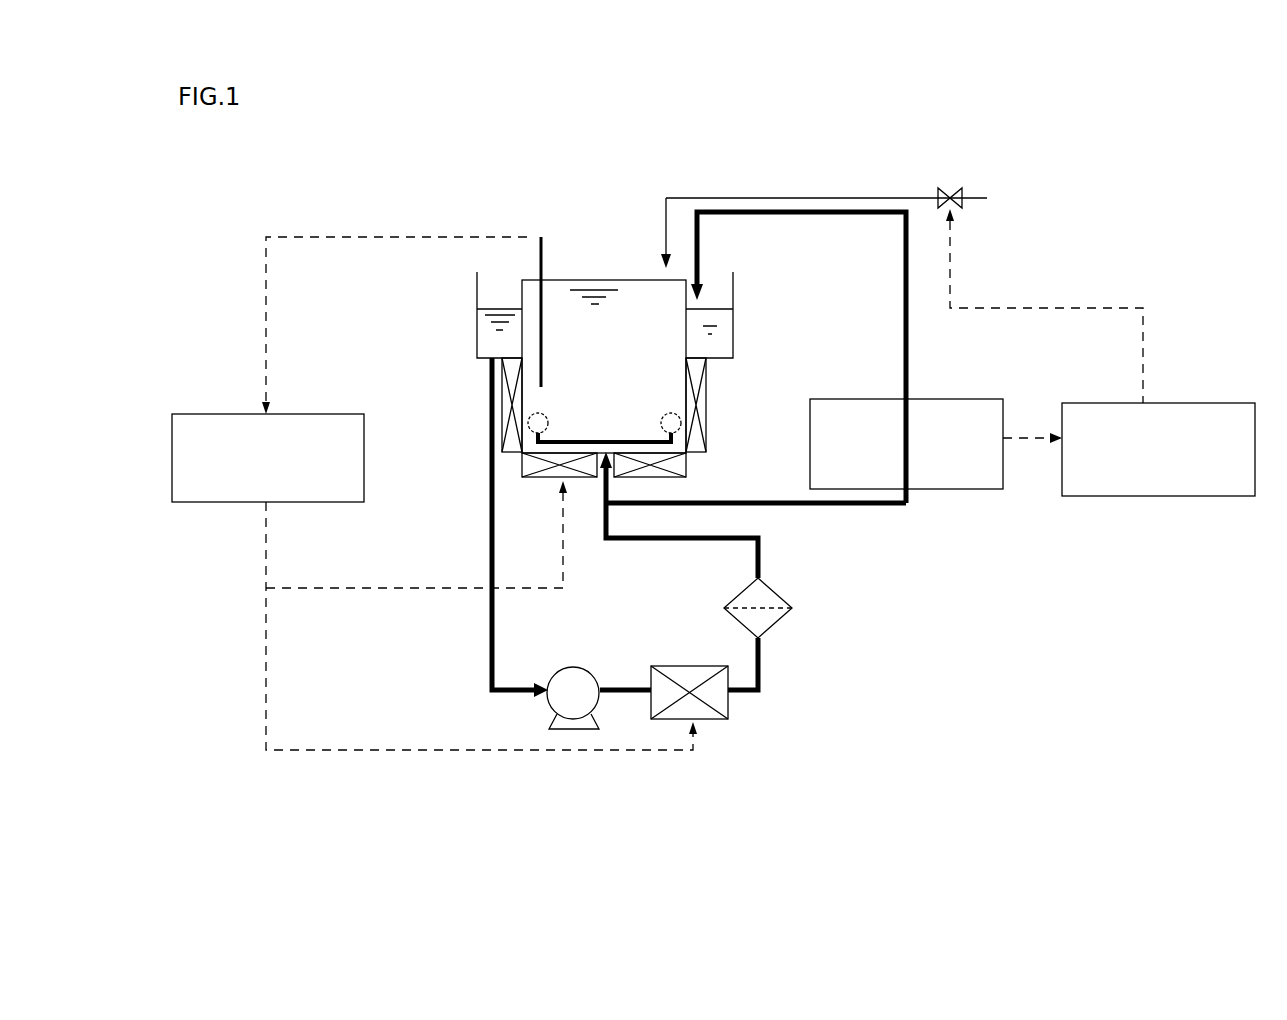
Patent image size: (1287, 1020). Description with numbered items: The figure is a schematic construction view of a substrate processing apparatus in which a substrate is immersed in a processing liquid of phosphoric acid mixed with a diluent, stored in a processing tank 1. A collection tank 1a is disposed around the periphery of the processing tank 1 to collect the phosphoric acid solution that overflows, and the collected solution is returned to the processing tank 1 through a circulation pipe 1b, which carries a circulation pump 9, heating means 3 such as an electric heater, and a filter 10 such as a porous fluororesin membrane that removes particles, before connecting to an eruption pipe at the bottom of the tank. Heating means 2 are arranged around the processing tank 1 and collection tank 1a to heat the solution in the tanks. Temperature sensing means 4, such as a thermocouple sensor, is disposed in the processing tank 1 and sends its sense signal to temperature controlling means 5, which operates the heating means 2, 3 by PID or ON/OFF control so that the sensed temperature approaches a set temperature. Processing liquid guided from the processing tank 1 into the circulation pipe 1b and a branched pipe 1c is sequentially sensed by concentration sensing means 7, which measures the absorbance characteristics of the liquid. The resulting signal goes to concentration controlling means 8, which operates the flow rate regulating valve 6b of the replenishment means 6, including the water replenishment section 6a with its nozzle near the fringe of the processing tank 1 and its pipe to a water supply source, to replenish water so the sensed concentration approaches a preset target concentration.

The processing tank 1 is at (753, 284).
The collection tank 1a is at (733, 332).
The circulation pipe 1b is at (466, 498).
The branched pipe 1c is at (884, 524).
The heating means 2 is at (706, 433).
The heating means 3 is at (728, 702).
The temperature sensing means 4 is at (546, 253).
The temperature controlling means 5 is at (307, 413).
The replenishment means 6 is at (793, 175).
The water replenishment section 6a is at (666, 231).
The flow rate regulating valve 6b is at (962, 165).
The concentration sensing means 7 is at (949, 399).
The concentration controlling means 8 is at (1192, 403).
The circulation pump 9 is at (577, 666).
The filter 10 is at (792, 608).